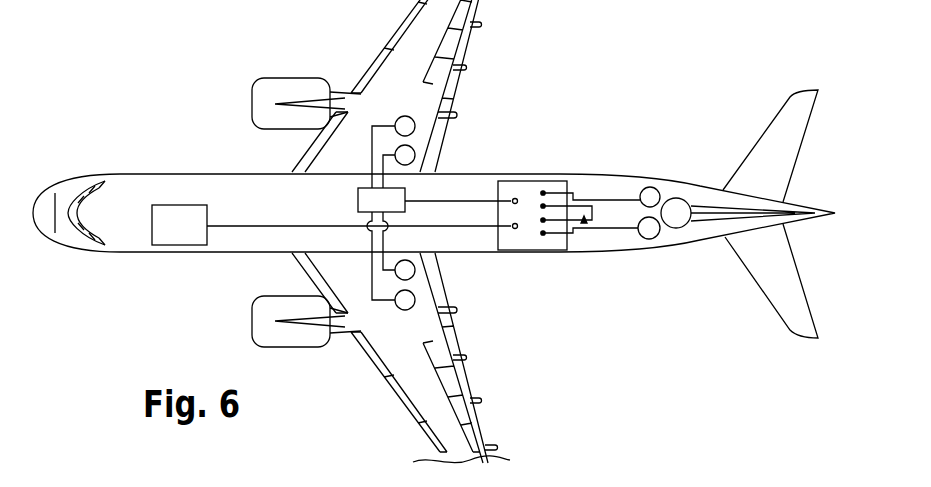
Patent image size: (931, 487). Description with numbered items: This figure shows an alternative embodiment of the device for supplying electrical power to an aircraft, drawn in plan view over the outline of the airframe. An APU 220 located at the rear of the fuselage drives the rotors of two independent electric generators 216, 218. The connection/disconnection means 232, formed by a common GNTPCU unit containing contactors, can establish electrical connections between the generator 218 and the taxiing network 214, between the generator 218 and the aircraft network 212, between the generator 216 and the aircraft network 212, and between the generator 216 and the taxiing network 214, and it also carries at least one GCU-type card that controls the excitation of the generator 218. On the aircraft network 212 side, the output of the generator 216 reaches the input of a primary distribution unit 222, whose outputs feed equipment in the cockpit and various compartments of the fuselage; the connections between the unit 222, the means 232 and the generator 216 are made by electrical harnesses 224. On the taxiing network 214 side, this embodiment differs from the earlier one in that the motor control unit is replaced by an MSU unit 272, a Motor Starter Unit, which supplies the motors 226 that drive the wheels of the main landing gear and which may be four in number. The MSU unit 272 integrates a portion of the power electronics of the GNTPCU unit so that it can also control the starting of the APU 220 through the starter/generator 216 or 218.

The aircraft network 212 is at (248, 236).
The taxiing network 214 is at (475, 187).
The generator 216 is at (650, 240).
The generator 218 is at (650, 187).
The APU 220 is at (686, 198).
The primary distribution unit 222 is at (171, 217).
The electrical harnesses 224 is at (607, 232).
The motors 226 is at (396, 152).
The connection/disconnection means 232 is at (570, 244).
The MSU unit 272 is at (405, 197).